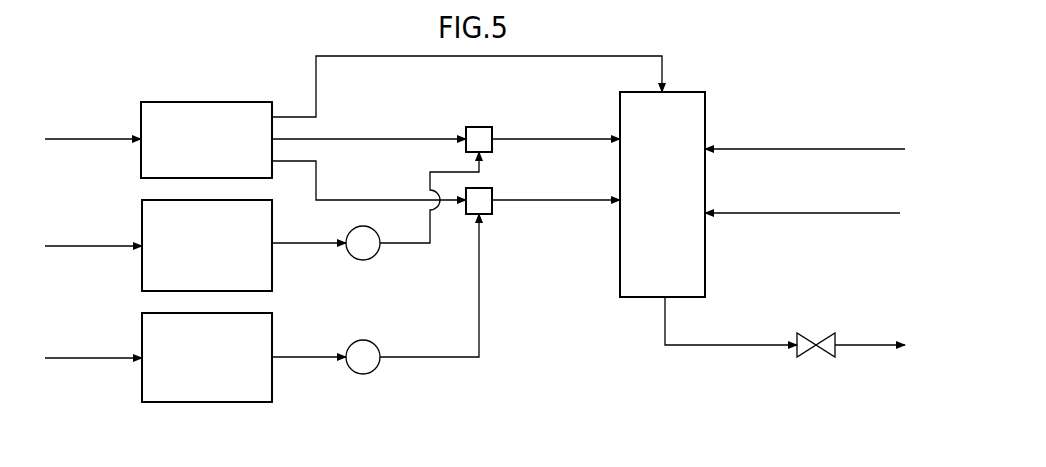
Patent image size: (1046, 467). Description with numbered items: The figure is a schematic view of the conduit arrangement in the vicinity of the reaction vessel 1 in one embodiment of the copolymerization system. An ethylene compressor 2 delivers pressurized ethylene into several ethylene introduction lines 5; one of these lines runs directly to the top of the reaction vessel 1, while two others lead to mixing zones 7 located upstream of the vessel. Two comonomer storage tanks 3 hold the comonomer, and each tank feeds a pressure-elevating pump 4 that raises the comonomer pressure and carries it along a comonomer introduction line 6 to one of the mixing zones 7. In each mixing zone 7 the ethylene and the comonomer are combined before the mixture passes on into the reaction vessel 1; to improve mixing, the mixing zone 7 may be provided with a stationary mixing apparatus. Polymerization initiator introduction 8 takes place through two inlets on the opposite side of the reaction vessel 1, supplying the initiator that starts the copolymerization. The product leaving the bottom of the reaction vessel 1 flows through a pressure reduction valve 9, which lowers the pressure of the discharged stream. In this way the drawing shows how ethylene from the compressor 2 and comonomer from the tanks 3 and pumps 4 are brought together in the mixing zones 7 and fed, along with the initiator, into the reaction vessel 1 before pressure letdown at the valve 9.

The reaction vessel 1 is at (707, 113).
The ethylene compressor 2 is at (166, 102).
The comonomer storage tank 3 is at (140, 214).
The pressure-elevating pump 4 is at (350, 258).
The ethylene introduction line 5 is at (368, 56).
The comonomer introduction line 6 is at (428, 176).
The mixing zone 7 is at (566, 139).
The polymerization initiator introduction 8 is at (832, 149).
The pressure reduction valve 9 is at (808, 337).